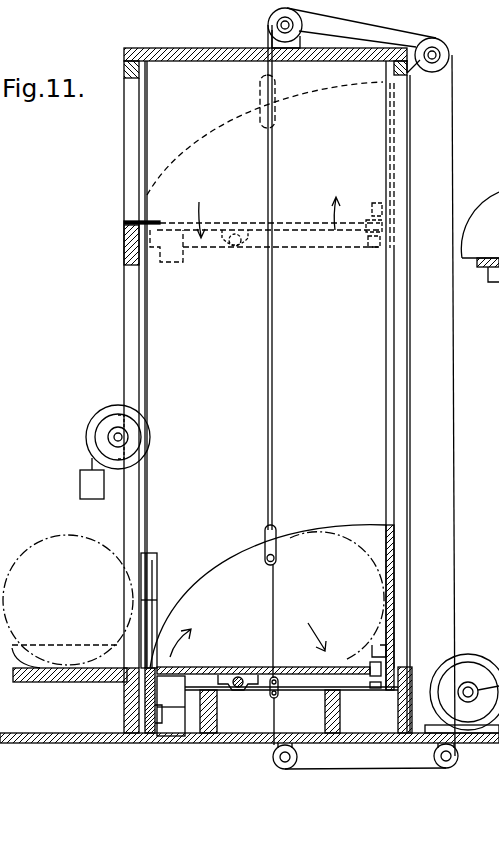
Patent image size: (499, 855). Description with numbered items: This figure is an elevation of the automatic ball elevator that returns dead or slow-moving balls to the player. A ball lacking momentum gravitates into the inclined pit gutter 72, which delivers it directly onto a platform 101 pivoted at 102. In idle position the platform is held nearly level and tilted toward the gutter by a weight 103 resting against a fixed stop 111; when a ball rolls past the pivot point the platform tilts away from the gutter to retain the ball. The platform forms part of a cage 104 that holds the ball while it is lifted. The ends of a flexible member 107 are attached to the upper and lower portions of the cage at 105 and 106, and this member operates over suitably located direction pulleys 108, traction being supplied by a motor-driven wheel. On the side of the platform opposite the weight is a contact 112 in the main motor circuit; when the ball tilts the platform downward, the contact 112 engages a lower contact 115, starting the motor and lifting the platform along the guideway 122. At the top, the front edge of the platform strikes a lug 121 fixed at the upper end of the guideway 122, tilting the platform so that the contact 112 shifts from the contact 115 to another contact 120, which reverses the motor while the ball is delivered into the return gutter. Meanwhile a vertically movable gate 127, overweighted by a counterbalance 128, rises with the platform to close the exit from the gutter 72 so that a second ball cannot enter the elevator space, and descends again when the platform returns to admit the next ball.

The pit gutter 72 is at (76, 682).
The platform 101 is at (229, 668).
The pivot 102 is at (238, 691).
The weight 103 is at (170, 265).
The cage 104 is at (390, 580).
The upper attachment point 105 is at (279, 538).
The lower attachment point 106 is at (280, 693).
The flexible member 107 is at (455, 433).
The direction pulleys 108 is at (272, 16).
The fixed stop 111 is at (163, 742).
The contact 112 is at (366, 224).
The contact 115 is at (372, 247).
The contact 120 is at (374, 207).
The lug 121 is at (150, 221).
The guideway 122 is at (143, 341).
The vertically movable gate 127 is at (124, 742).
The counterbalance 128 is at (80, 481).